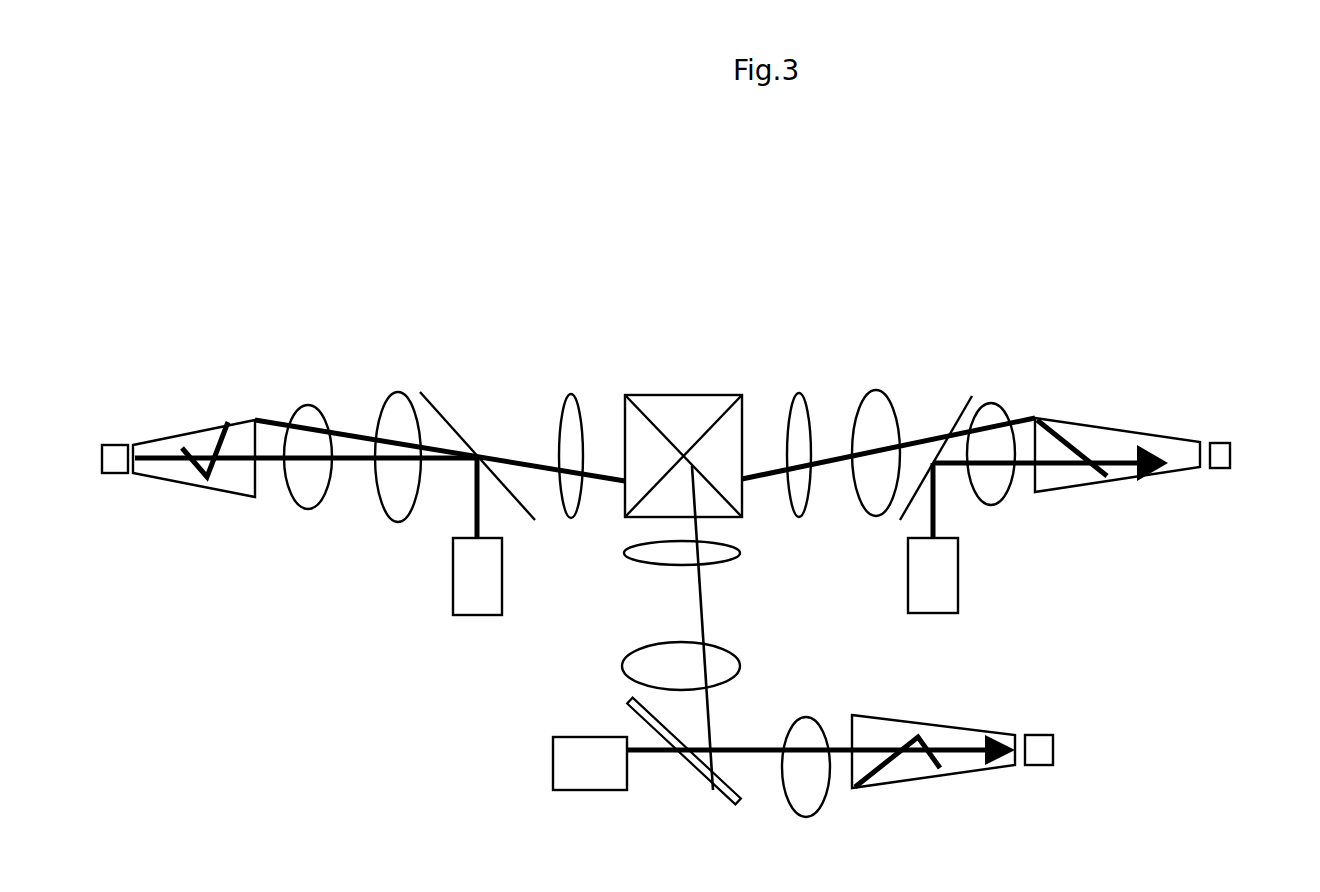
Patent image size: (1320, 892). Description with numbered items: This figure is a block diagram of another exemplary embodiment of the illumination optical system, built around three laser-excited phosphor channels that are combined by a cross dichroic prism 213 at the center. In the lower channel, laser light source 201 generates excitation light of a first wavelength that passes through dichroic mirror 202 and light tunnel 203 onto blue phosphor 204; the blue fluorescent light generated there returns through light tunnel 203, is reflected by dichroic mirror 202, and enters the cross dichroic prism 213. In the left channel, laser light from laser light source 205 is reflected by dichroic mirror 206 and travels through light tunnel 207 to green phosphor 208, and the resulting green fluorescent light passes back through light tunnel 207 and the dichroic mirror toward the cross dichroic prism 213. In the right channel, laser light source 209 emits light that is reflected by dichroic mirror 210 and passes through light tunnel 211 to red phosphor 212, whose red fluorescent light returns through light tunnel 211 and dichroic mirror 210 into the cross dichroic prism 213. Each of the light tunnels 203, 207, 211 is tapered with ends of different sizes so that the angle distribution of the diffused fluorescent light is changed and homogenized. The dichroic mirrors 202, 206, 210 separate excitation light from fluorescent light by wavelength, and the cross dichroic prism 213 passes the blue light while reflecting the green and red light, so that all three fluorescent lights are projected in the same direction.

The laser light source 201 is at (553, 765).
The dichroic mirror 202 is at (690, 765).
The light tunnel 203 is at (930, 777).
The blue phosphor 204 is at (1055, 750).
The laser light source 205 is at (453, 580).
The dichroic mirror 206 is at (440, 412).
The light tunnel 207 is at (190, 432).
The green phosphor 208 is at (113, 443).
The laser light source 209 is at (960, 585).
The dichroic mirror 210 is at (953, 422).
The light tunnel 211 is at (1162, 436).
The red phosphor 212 is at (1230, 452).
The cross dichroic prism 213 is at (743, 398).